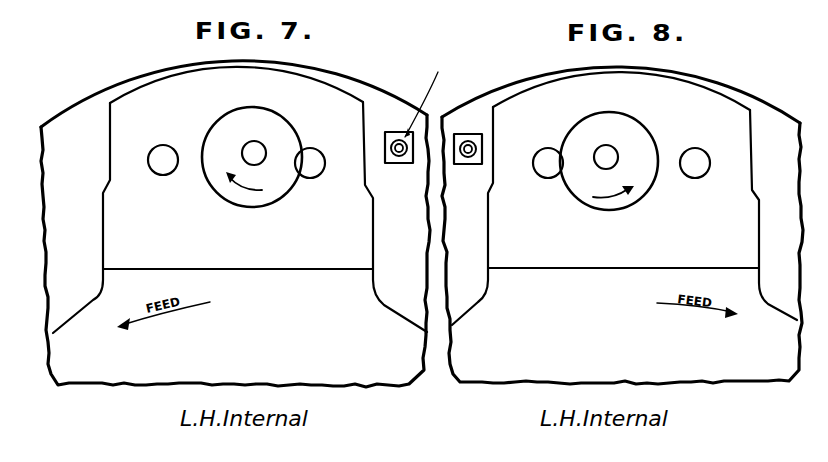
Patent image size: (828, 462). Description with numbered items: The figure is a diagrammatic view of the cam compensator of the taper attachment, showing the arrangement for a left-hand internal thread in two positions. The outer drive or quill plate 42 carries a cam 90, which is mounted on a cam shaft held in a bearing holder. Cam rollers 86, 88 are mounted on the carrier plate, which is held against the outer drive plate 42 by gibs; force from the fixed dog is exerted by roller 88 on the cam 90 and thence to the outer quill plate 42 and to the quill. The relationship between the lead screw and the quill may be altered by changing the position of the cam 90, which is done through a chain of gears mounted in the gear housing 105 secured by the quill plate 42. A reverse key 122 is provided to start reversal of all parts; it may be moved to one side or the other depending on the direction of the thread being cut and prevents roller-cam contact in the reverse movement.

In FIG. 7, the outer drive plate 42 is at (125, 104).
In FIG. 8, the outer drive plate 42 is at (530, 100).
In FIG. 7, the cam roller 86 is at (315, 169).
In FIG. 8, the cam roller 86 is at (700, 173).
In FIG. 7, the cam roller 88 is at (163, 171).
In FIG. 8, the cam roller 88 is at (542, 177).
In FIG. 7, the cam 90 is at (273, 200).
In FIG. 8, the cam 90 is at (577, 200).
In FIG. 7, the gear housing 105 is at (372, 97).
In FIG. 8, the gear housing 105 is at (745, 92).
In FIG. 7, the reverse key 122 is at (393, 164).
In FIG. 8, the reverse key 122 is at (467, 164).